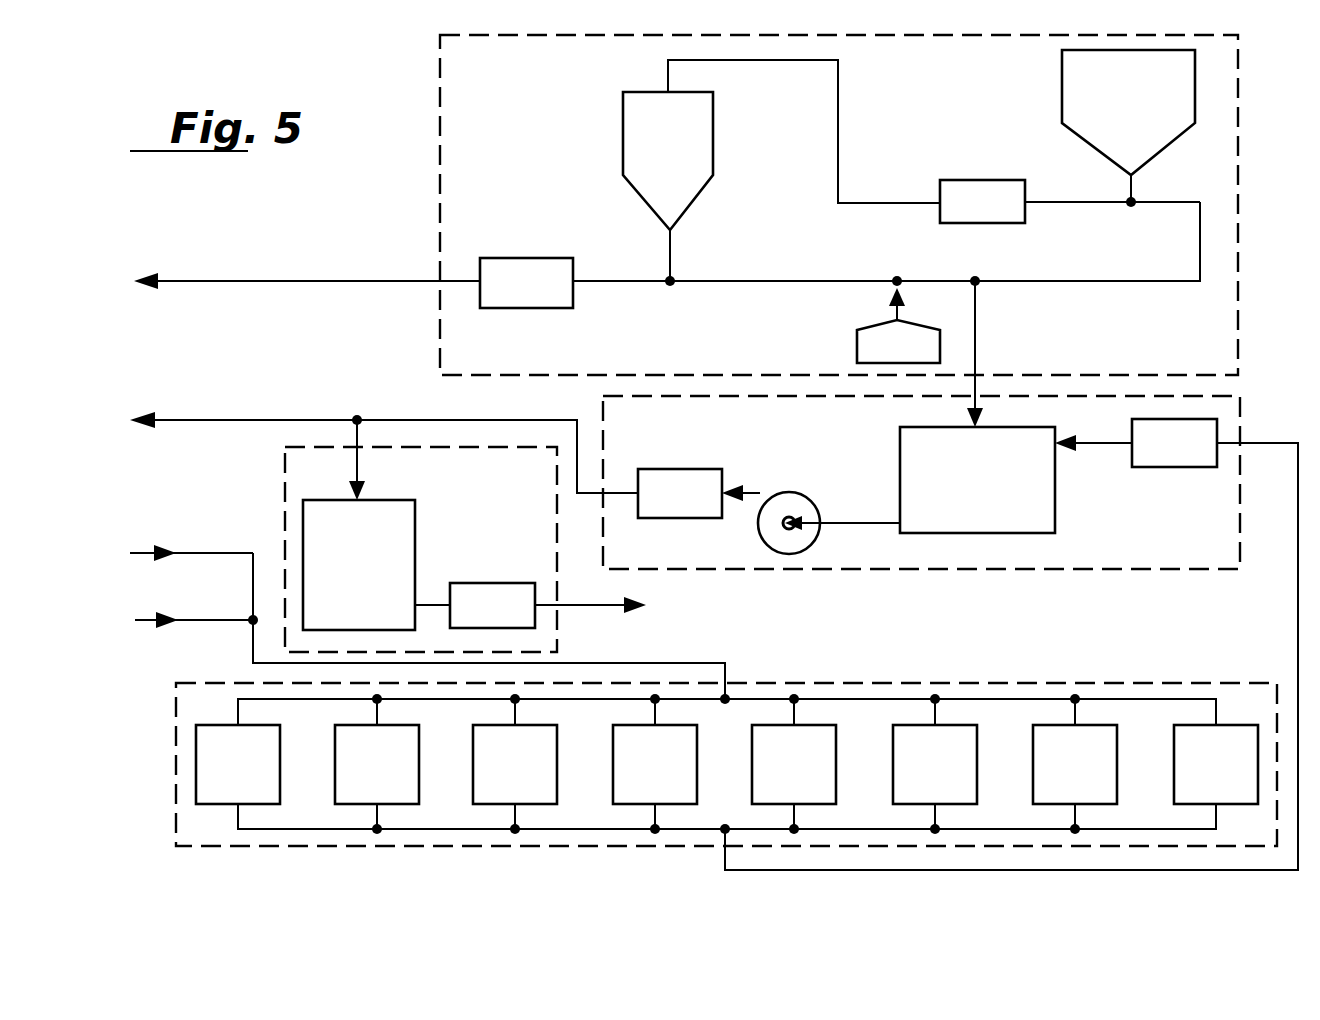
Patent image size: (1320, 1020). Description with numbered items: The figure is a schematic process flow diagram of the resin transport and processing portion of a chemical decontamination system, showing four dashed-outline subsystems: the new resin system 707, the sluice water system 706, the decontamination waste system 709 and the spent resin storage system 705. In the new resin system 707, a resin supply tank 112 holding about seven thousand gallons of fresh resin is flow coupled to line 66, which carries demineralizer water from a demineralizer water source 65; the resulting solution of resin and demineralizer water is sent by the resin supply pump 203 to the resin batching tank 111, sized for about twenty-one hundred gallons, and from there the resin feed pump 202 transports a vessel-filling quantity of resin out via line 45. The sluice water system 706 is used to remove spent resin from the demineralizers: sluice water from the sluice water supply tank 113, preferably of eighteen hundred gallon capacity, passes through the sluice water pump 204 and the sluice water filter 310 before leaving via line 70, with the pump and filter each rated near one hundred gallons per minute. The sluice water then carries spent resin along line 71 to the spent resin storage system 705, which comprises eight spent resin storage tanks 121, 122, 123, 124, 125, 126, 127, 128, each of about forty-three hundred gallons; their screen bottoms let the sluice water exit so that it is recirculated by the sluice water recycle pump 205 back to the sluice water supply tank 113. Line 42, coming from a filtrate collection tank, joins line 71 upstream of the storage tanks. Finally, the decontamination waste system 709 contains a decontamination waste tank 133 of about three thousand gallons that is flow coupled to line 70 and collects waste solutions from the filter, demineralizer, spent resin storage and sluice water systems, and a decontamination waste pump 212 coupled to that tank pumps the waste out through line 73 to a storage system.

The line 45 is at (267, 281).
The resin feed pump 202 is at (523, 263).
The resin batching tank 111 is at (650, 145).
The resin supply tank 112 is at (1112, 101).
The resin supply pump 203 is at (982, 183).
The new resin system 707 is at (1240, 130).
The demineralizer water source 65 is at (877, 345).
The line 66 is at (1152, 281).
The sluice water system 706 is at (1240, 412).
The line 70 is at (243, 420).
The decontamination waste system 709 is at (285, 462).
The sluice water filter 310 is at (688, 476).
The sluice water pump 204 is at (797, 500).
The sluice water recycle pump 205 is at (1147, 458).
The sluice water supply tank 113 is at (958, 485).
The line 71 is at (195, 553).
The line 42 is at (218, 620).
The decontamination waste tank 133 is at (340, 585).
The decontamination waste pump 212 is at (490, 582).
The line 73 is at (590, 605).
The spent resin storage system 705 is at (176, 812).
The spent resin storage tank 121 is at (220, 782).
The spent resin storage tank 122 is at (359, 782).
The spent resin storage tank 123 is at (497, 782).
The spent resin storage tank 124 is at (637, 782).
The spent resin storage tank 125 is at (776, 782).
The spent resin storage tank 126 is at (917, 782).
The spent resin storage tank 127 is at (1057, 782).
The spent resin storage tank 128 is at (1198, 782).